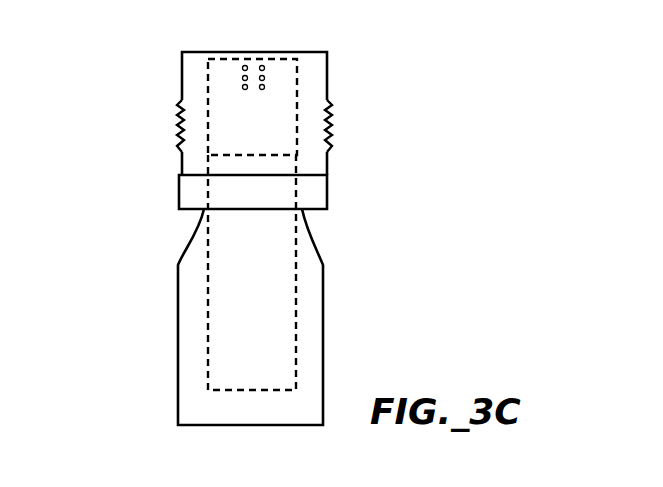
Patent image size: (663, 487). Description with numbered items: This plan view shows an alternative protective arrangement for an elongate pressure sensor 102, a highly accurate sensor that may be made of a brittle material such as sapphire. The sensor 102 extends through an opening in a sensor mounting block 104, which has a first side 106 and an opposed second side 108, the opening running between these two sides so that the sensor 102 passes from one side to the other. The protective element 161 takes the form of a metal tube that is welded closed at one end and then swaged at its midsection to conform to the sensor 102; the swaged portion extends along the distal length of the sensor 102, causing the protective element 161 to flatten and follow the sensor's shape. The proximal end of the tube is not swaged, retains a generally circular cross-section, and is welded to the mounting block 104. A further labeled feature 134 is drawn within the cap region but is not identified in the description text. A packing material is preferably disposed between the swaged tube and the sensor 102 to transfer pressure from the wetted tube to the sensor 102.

The elongate pressure sensor 102 is at (205, 257).
The sensor mounting block 104 is at (180, 150).
The first side 106 is at (312, 212).
The second side 108 is at (225, 52).
The reservoir with dispensing openings 134 is at (288, 52).
The protective element 161 is at (190, 370).